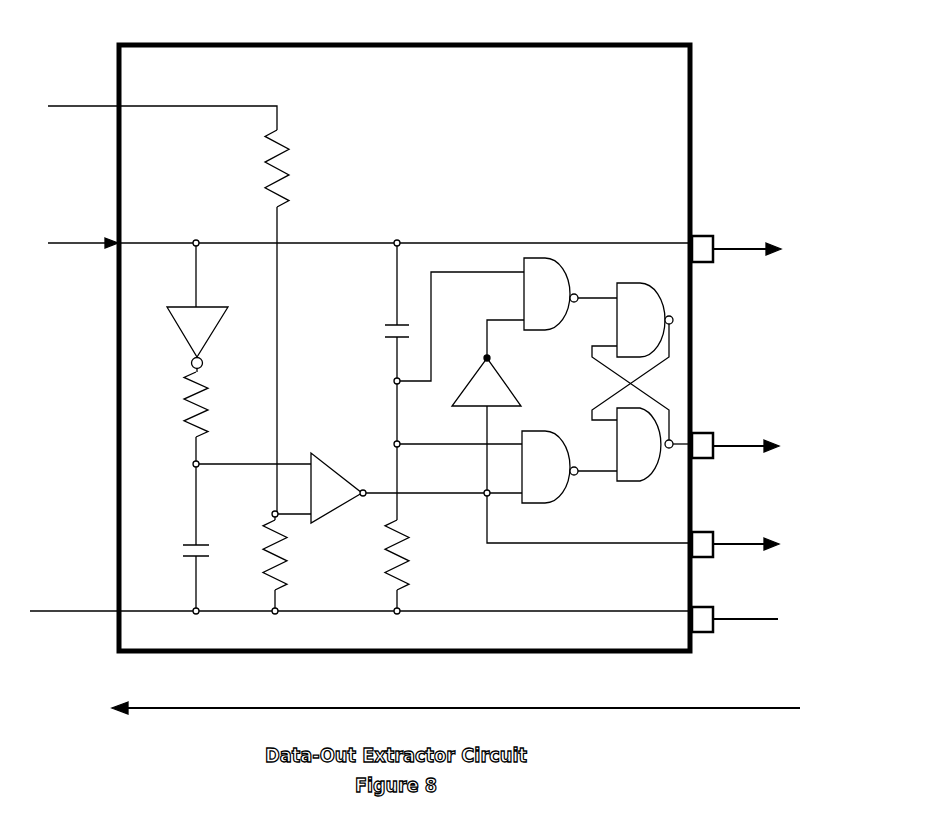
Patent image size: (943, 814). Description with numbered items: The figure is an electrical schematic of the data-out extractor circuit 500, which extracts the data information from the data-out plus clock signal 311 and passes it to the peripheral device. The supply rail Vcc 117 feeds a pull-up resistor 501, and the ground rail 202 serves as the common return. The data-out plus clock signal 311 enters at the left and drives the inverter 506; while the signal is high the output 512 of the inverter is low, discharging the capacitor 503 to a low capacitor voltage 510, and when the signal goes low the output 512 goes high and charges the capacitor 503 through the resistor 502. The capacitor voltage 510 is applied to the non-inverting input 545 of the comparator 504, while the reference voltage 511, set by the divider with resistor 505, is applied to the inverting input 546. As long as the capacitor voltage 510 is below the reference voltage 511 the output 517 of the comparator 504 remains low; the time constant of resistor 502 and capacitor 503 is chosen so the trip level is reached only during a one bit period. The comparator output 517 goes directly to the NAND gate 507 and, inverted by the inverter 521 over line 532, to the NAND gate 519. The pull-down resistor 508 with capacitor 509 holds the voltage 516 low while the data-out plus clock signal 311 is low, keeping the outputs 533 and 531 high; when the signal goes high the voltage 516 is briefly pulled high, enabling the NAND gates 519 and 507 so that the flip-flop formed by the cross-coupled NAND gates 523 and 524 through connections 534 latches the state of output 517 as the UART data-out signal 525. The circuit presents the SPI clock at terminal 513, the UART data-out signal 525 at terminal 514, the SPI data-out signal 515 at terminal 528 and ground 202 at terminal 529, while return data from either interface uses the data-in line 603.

The data-out extractor circuit 500 is at (117, 40).
The Vcc supply line 117 is at (169, 106).
The data-out plus clock signal 311 is at (429, 228).
The pull-up resistor 501 is at (258, 158).
The inverter 506 is at (213, 298).
The output of inverter 512 is at (185, 363).
The resistor 502 is at (215, 393).
The capacitor voltage 510 is at (207, 454).
The capacitor 503 is at (208, 535).
The resistor 505 is at (257, 564).
The reference voltage 511 is at (268, 488).
The comparator 504 is at (327, 453).
The non-inverting input 545 is at (294, 452).
The inverting input 546 is at (295, 523).
The output of comparator 517 is at (372, 482).
The capacitor 509 is at (382, 320).
The pull-down resistor 508 is at (380, 547).
The ground 202 is at (472, 583).
The voltage 516 is at (432, 390).
The inverter 521 is at (486, 380).
The inverter output line 532 is at (492, 346).
The NAND gate 519 is at (551, 294).
The output of NAND gate 533 is at (597, 292).
The NAND gate 523 is at (645, 320).
The cross-coupled latch connections 534 is at (588, 400).
The NAND gate 507 is at (550, 467).
The output of NAND gate 531 is at (583, 476).
The NAND gate 524 is at (645, 444).
The UART data-out signal 525 is at (673, 458).
The SPI clock terminal 513 is at (702, 220).
The UART data out terminal 514 is at (710, 400).
The SPI data-out terminal 528 is at (702, 523).
The ground terminal 529 is at (713, 600).
The SPI data-out signal 515 is at (785, 533).
The data-in 603 is at (434, 709).